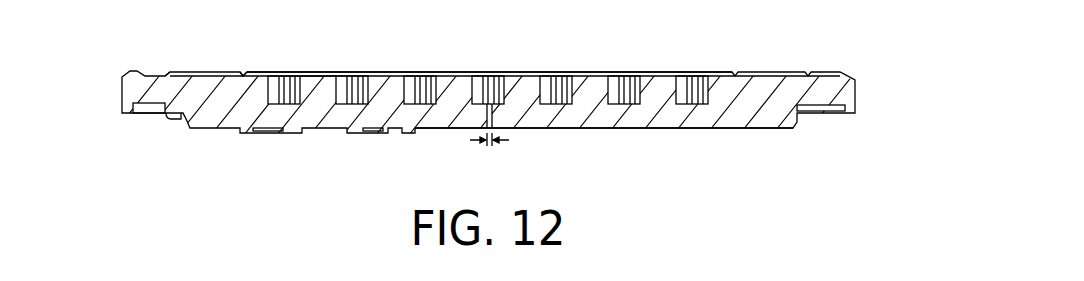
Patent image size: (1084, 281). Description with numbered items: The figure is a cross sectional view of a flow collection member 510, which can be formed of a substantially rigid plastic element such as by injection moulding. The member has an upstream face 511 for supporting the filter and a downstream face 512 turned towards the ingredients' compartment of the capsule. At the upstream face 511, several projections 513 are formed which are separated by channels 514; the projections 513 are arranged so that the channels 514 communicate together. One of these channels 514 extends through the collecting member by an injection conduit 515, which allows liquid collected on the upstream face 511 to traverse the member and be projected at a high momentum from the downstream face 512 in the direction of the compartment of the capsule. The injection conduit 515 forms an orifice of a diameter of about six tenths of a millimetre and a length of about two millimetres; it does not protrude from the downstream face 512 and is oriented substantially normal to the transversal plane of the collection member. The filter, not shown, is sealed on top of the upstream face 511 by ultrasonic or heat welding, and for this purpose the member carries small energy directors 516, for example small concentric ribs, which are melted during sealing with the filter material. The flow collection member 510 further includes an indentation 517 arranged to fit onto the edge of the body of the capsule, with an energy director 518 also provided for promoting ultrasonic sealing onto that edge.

The flow collection member 510 is at (862, 70).
The upstream face 511 is at (657, 72).
The downstream face 512 is at (641, 128).
The projections 513 is at (327, 82).
The channels 514 is at (283, 82).
The injection conduit 515 is at (489, 112).
The energy directors 516 is at (243, 72).
The indentation 517 is at (138, 110).
The energy director 518 is at (168, 112).